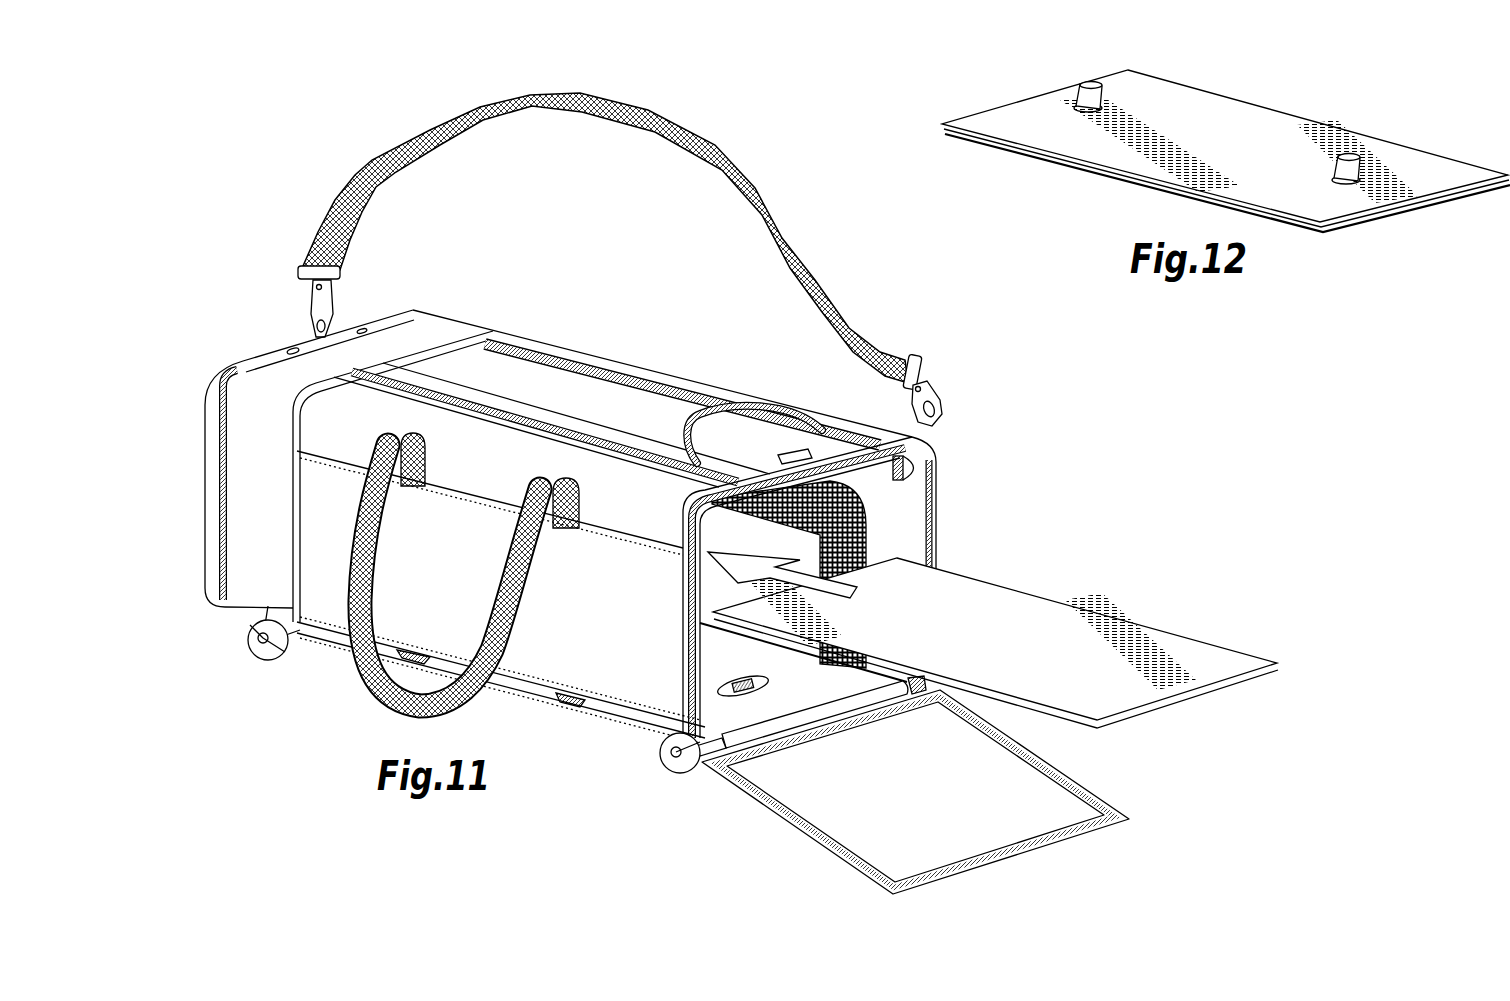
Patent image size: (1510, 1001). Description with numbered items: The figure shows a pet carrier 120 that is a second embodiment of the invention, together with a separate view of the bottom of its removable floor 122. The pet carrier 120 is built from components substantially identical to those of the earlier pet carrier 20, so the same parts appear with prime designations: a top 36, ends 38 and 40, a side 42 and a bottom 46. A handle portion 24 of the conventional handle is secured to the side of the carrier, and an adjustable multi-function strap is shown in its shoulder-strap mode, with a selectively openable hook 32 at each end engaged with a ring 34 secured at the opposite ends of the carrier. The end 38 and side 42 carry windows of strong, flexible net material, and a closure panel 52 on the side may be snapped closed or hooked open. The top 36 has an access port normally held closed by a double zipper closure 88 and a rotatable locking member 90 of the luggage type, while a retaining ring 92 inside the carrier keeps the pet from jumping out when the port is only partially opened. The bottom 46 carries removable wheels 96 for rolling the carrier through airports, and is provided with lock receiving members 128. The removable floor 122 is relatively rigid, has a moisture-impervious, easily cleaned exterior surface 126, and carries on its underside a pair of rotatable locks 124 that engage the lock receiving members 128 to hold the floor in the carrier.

In FIG. 11, the pet carrier 20 is at (262, 338).
In FIG. 11, the handle portion 24 is at (382, 695).
In FIG. 11, the selectively openable hook 32 is at (338, 292).
In FIG. 11, the ring 34 is at (338, 198).
In FIG. 11, the top 36 is at (572, 398).
In FIG. 11, the end 38 is at (890, 530).
In FIG. 11, the end 40 is at (200, 428).
In FIG. 11, the side 42 is at (550, 652).
In FIG. 11, the bottom 46 is at (617, 720).
In FIG. 11, the closure panel 52 is at (603, 634).
In FIG. 11, the double zipper closure 88 is at (693, 410).
In FIG. 11, the rotatable locking member 90 is at (793, 449).
In FIG. 11, the retaining ring 92 is at (921, 464).
In FIG. 11, the wheels or rollers 96 is at (263, 662).
In FIG. 11, the pet carrier 120 is at (627, 238).
In FIG. 11, the removable floor 122 is at (1010, 643).
In FIG. 12, the removable floor 122 is at (1013, 105).
In FIG. 12, the rotatable lock 124 is at (1080, 88).
In FIG. 11, the exterior surface 126 is at (1025, 647).
In FIG. 12, the exterior surface 126 is at (1263, 165).
In FIG. 11, the lock receiving member 128 is at (755, 698).